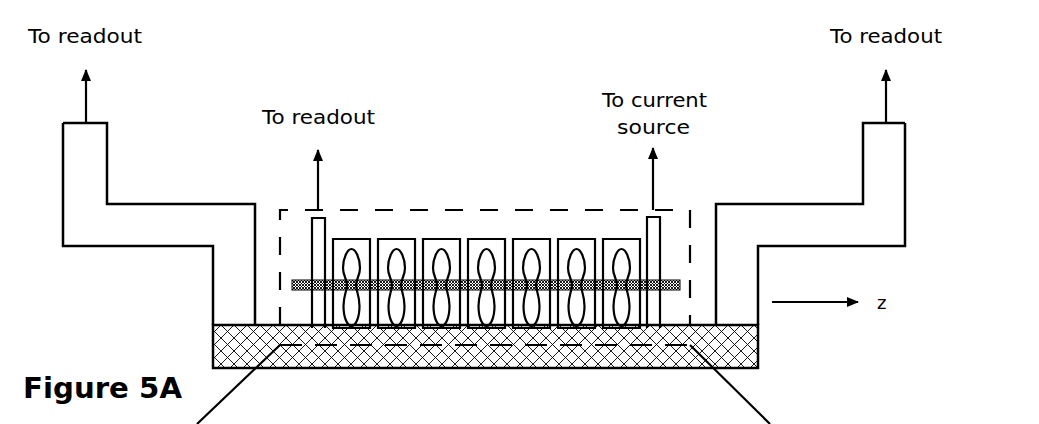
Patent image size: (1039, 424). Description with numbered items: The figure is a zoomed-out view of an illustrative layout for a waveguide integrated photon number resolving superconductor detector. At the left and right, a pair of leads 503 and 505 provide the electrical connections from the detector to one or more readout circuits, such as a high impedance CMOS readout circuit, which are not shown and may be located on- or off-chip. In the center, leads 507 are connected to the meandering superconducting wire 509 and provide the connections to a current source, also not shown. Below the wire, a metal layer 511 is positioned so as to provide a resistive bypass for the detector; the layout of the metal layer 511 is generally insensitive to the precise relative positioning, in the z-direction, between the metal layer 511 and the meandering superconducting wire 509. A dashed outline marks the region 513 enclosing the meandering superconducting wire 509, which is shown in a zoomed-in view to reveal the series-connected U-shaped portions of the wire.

The lead 503 is at (163, 215).
The lead 505 is at (777, 215).
The leads 507 is at (637, 215).
The meandering superconducting wire 509 is at (477, 224).
The metal layer 511 is at (220, 326).
The region 513 is at (667, 209).